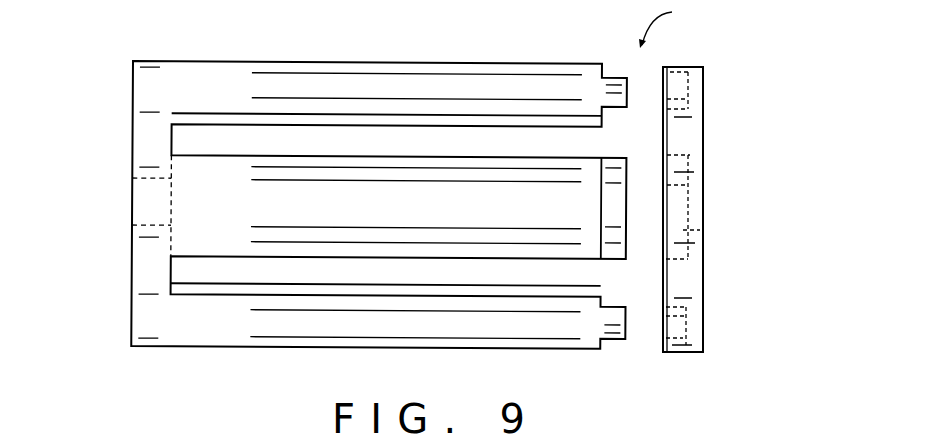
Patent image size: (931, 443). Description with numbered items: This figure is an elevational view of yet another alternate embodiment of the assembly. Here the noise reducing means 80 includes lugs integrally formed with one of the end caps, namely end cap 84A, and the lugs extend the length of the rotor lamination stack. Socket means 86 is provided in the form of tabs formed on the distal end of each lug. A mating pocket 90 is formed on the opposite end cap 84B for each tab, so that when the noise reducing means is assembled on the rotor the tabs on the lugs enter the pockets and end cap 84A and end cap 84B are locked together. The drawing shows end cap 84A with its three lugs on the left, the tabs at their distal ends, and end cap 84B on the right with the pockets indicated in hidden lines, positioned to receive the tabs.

The means 80 is at (738, 212).
The end cap 84A is at (132, 132).
The end cap 84B is at (703, 108).
The socket means 86 is at (671, 24).
The mating pocket 90 is at (682, 66).